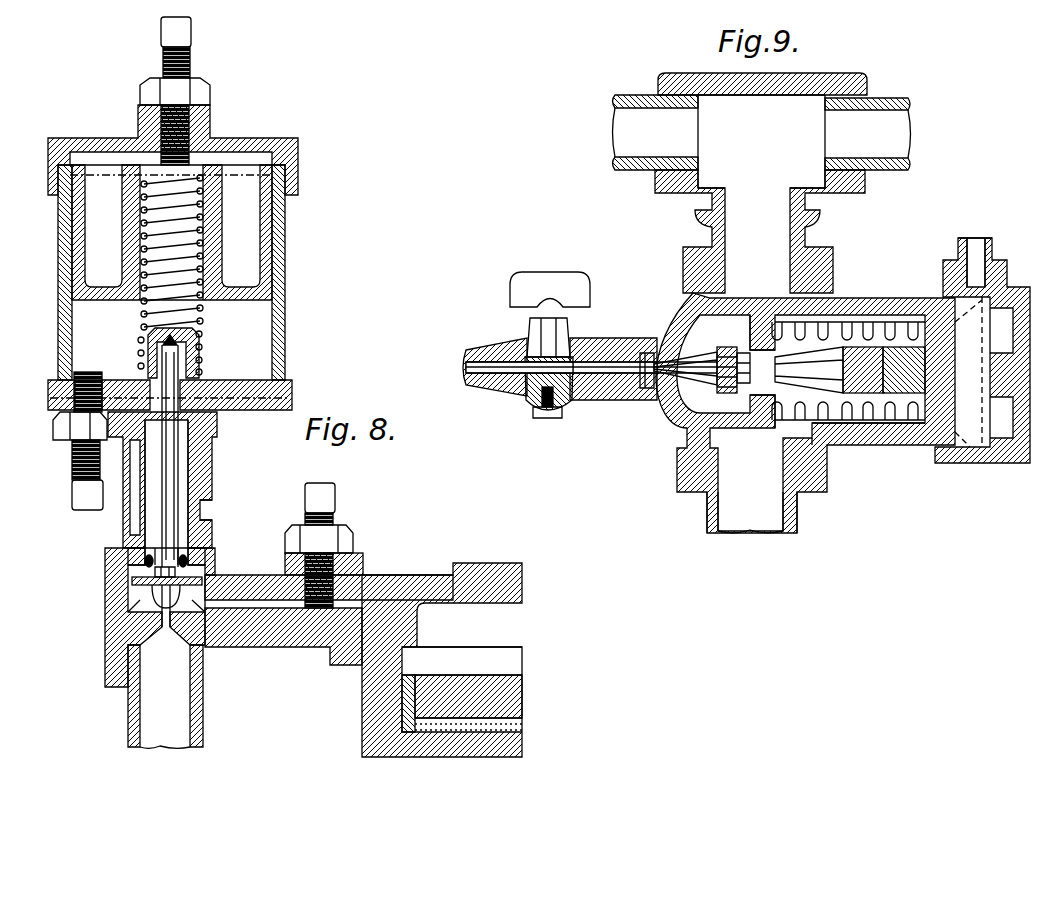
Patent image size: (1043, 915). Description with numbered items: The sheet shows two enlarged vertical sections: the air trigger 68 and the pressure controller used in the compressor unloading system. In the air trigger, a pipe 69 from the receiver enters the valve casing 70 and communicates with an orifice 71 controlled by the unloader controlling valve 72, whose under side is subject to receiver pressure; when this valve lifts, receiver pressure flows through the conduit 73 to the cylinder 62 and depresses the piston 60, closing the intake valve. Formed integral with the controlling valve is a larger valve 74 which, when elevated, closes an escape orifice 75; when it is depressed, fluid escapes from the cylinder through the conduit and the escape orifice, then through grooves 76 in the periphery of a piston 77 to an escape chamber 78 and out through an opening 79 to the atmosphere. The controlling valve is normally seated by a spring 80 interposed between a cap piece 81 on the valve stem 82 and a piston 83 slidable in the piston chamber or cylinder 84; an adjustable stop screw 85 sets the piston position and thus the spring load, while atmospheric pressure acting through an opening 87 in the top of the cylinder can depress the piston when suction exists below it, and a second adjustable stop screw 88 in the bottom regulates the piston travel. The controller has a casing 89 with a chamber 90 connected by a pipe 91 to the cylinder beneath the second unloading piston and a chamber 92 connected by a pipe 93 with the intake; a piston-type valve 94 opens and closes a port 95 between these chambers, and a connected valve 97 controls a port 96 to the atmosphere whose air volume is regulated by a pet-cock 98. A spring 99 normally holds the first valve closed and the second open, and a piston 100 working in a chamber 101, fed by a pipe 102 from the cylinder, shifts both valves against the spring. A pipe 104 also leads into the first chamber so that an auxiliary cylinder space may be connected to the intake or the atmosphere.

In FIG. 8, the piston 60 is at (470, 684).
In FIG. 8, the cylinder 62 is at (508, 621).
In FIG. 8, the air trigger 68 is at (152, 480).
In FIG. 8, the pipe 69 is at (194, 717).
In FIG. 8, the valve casing 70 is at (116, 607).
In FIG. 8, the orifice 71 is at (165, 640).
In FIG. 8, the unloader controlling valve 72 is at (128, 624).
In FIG. 8, the conduit 73 is at (270, 602).
In FIG. 8, the valve 74 is at (135, 592).
In FIG. 8, the escape orifice 75 is at (190, 568).
In FIG. 8, the grooves 76 is at (203, 554).
In FIG. 8, the piston 77 is at (130, 562).
In FIG. 8, the escape chamber 78 is at (190, 494).
In FIG. 8, the opening 79 is at (205, 523).
In FIG. 8, the spring 80 is at (205, 320).
In FIG. 8, the cap piece 81 is at (199, 360).
In FIG. 8, the valve stem 82 is at (178, 428).
In FIG. 8, the piston 83 is at (107, 293).
In FIG. 8, the piston chamber or cylinder 84 is at (287, 318).
In FIG. 8, the adjustable stop screw 85 is at (198, 128).
In FIG. 8, the opening 87 is at (112, 137).
In FIG. 8, the adjustable stop screw 88 is at (72, 450).
In FIG. 9, the casing 89 is at (670, 410).
In FIG. 9, the chamber 90 is at (705, 320).
In FIG. 9, the pipe 91 is at (630, 152).
In FIG. 9, the chamber 92 is at (826, 445).
In FIG. 9, the pipe 93 is at (800, 521).
In FIG. 9, the valve 94 is at (718, 393).
In FIG. 9, the port 95 is at (748, 344).
In FIG. 9, the port 96 is at (655, 399).
In FIG. 9, the valve 97 is at (656, 366).
In FIG. 9, the pet-cock 98 is at (578, 346).
In FIG. 9, the spring 99 is at (849, 340).
In FIG. 9, the piston 100 is at (953, 347).
In FIG. 9, the chamber 101 is at (968, 440).
In FIG. 9, the pipe 102 is at (976, 247).
In FIG. 9, the pipe 104 is at (891, 165).